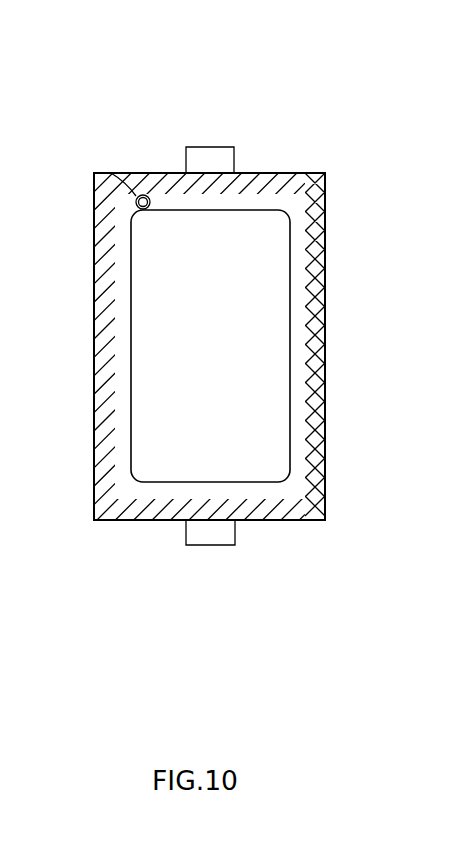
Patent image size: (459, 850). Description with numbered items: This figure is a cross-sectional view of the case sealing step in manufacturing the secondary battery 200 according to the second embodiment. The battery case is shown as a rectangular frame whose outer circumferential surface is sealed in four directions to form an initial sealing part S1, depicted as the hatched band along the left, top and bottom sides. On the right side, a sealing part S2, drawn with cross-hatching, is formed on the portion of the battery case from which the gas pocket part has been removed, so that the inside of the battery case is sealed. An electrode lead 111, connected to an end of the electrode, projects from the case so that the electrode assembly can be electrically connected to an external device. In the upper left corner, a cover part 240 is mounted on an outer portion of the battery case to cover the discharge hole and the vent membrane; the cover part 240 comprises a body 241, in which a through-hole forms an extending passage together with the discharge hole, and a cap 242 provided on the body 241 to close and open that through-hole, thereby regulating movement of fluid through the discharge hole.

The secondary battery 200 is at (410, 56).
The cover part 240 is at (130, 114).
The body 241 is at (96, 171).
The cap 242 is at (143, 195).
The initial sealing part S1 is at (100, 436).
The sealing part S2 is at (323, 302).
The electrode lead 111 is at (210, 538).